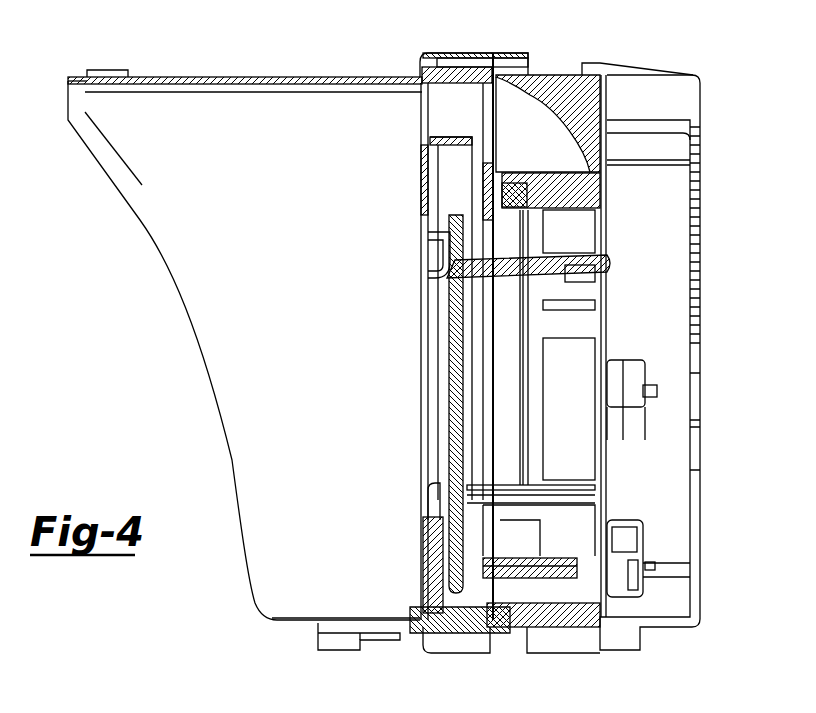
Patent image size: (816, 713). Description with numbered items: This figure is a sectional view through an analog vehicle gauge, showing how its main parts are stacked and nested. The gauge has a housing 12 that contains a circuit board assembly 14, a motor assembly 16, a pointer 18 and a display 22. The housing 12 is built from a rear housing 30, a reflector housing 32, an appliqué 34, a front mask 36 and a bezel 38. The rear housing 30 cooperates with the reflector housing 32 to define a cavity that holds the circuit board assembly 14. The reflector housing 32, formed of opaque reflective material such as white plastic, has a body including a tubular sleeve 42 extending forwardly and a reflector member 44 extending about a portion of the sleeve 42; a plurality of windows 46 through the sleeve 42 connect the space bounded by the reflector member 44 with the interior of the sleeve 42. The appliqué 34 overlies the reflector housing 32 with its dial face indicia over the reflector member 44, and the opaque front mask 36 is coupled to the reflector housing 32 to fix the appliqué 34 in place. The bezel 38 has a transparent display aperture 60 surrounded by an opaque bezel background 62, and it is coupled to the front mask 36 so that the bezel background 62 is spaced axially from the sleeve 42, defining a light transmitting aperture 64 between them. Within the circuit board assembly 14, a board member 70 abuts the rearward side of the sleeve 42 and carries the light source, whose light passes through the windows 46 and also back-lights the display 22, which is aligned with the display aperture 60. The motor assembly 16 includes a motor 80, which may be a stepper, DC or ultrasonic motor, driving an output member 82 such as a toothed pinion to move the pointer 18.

The housing 12 is at (297, 68).
The circuit board assembly 14 is at (603, 328).
The motor assembly 16 is at (658, 532).
The pointer 18 is at (483, 202).
The display 22 is at (410, 412).
The rear housing 30 is at (700, 148).
The reflector housing 32 is at (548, 95).
The appliqué 34 is at (483, 105).
The front mask 36 is at (191, 78).
The bezel 38 is at (420, 510).
The sleeve 42 is at (585, 192).
The reflector member 44 is at (560, 115).
The windows 46 is at (580, 243).
The transparent display aperture 60 is at (440, 318).
The bezel background 62 is at (420, 252).
The light transmitting aperture 64 is at (476, 134).
The board member 70 is at (605, 290).
The motor 80 is at (633, 590).
The output member 82 is at (540, 558).